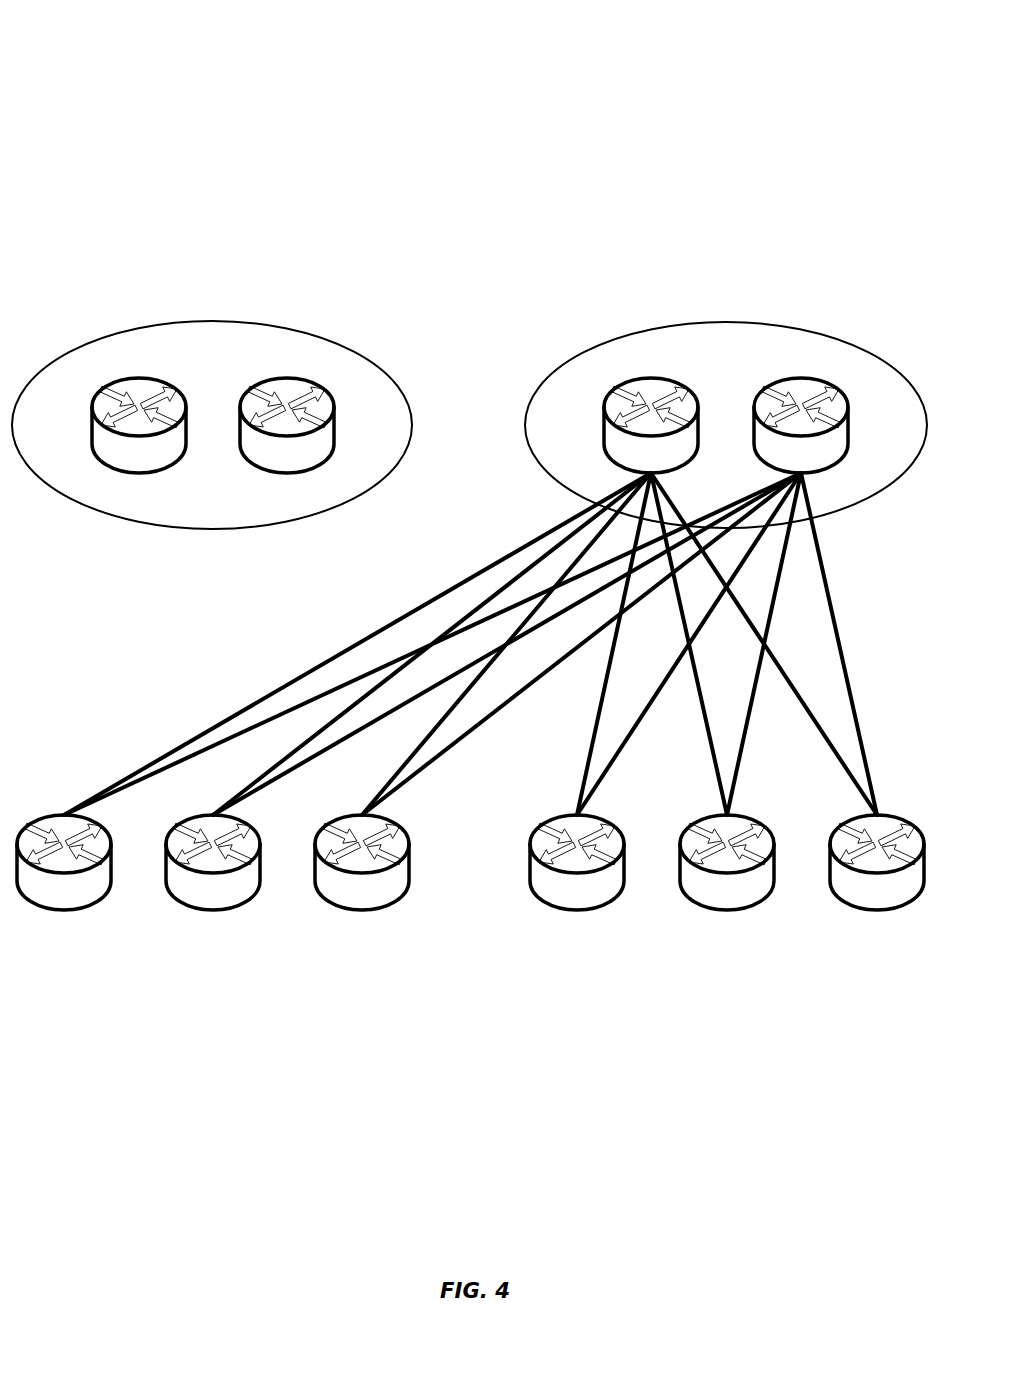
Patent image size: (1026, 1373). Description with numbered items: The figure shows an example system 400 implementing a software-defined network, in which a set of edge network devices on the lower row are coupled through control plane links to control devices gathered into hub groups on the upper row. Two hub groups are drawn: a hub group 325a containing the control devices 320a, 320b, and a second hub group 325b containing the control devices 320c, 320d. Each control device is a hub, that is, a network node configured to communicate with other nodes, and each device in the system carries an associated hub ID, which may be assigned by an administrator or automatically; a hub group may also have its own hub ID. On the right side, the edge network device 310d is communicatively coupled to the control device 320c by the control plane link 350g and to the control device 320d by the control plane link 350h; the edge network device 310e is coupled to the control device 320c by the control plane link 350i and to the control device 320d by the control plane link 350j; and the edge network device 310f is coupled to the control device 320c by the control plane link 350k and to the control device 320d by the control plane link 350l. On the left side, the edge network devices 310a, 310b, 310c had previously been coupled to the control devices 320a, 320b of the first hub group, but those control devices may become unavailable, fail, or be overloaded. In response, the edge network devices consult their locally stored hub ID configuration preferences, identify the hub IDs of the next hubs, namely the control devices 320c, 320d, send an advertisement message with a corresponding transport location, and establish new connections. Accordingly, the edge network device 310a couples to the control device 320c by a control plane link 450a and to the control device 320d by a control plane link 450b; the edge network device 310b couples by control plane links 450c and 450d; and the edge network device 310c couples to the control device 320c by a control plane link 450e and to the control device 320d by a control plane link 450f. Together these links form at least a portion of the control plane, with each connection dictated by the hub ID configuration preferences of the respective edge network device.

The system 400 is at (84, 62).
The hub group 325a is at (266, 324).
The hub group 325b is at (670, 325).
The control device 320a is at (130, 378).
The control device 320b is at (288, 378).
The control device 320c is at (644, 378).
The control device 320d is at (804, 378).
The edge network device 310a is at (76, 910).
The edge network device 310b is at (225, 910).
The edge network device 310c is at (375, 910).
The edge network device 310d is at (550, 910).
The edge network device 310e is at (703, 910).
The edge network device 310f is at (858, 910).
The control plane link 450a is at (270, 695).
The control plane link 450b is at (227, 738).
The control plane link 450c is at (352, 705).
The control plane link 450d is at (386, 714).
The control plane link 450e is at (440, 722).
The control plane link 450f is at (517, 695).
The control plane link 350g is at (623, 600).
The control plane link 350h is at (693, 663).
The control plane link 350i is at (710, 741).
The control plane link 350j is at (744, 741).
The control plane link 350k is at (786, 677).
The control plane link 350l is at (831, 601).